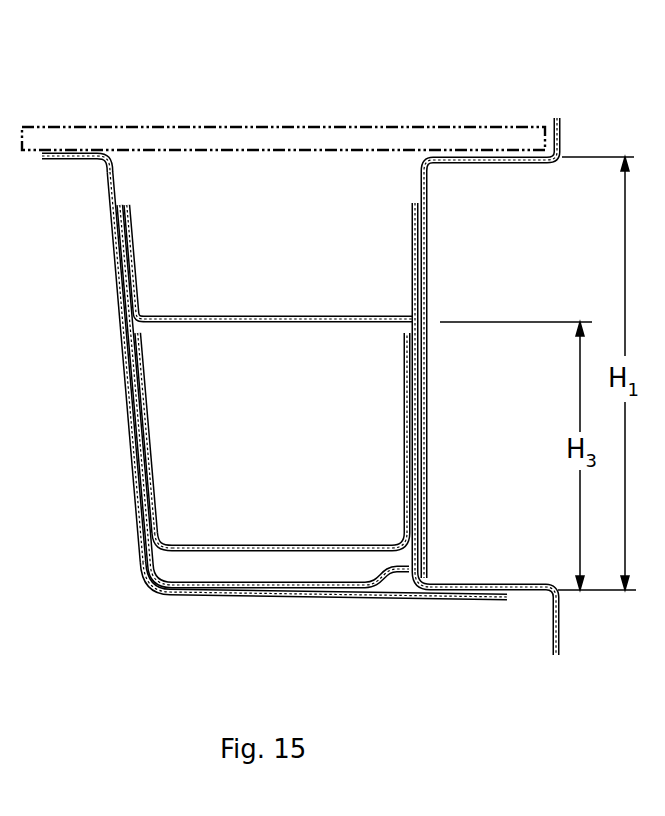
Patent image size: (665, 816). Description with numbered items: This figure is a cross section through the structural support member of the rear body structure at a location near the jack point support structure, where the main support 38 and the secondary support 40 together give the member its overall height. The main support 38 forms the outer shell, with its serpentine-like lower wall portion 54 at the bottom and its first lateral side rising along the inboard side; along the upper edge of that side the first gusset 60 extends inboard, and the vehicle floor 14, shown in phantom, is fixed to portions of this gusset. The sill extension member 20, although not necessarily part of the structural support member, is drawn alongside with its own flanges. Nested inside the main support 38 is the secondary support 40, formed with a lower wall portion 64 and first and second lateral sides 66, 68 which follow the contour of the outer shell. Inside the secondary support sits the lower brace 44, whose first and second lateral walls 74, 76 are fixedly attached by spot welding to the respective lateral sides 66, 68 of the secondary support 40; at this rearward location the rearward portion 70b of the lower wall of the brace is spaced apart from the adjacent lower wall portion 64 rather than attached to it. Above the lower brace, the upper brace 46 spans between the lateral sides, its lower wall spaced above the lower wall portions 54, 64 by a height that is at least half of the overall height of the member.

The vehicle floor 14 is at (217, 127).
The sill extension member 20 is at (428, 352).
The main support 38 is at (275, 600).
The secondary support 40 is at (308, 583).
The lower brace 44 is at (250, 545).
The upper brace 46 is at (241, 319).
The lower wall portion 54 is at (331, 600).
The first gusset 60 is at (70, 159).
The lower wall portion 64 is at (427, 580).
The first lateral side 66 is at (123, 374).
The second lateral side 68 is at (428, 465).
The rearward portion of the lower wall 70b is at (198, 544).
The first lateral wall 74 is at (153, 404).
The second lateral wall 76 is at (403, 392).